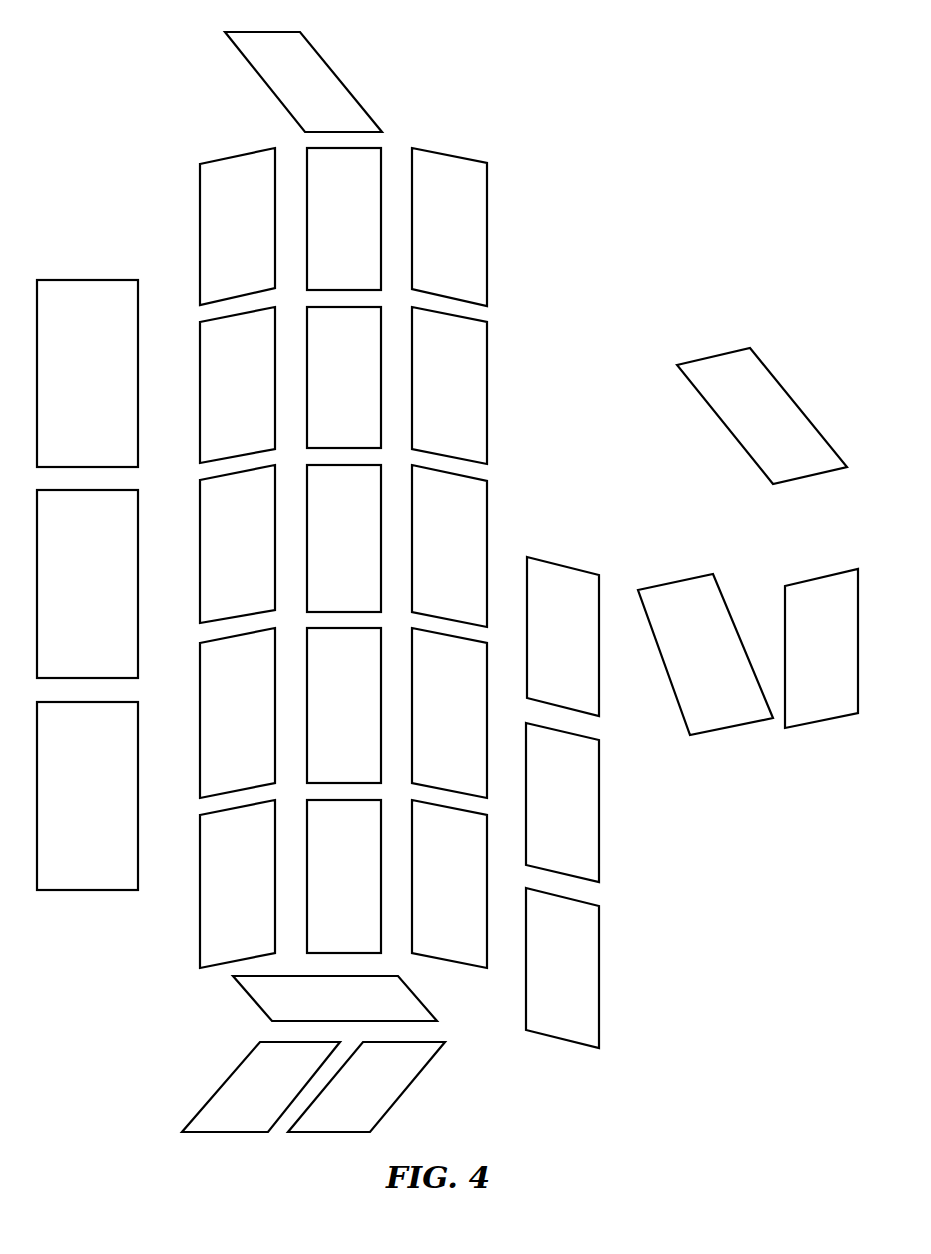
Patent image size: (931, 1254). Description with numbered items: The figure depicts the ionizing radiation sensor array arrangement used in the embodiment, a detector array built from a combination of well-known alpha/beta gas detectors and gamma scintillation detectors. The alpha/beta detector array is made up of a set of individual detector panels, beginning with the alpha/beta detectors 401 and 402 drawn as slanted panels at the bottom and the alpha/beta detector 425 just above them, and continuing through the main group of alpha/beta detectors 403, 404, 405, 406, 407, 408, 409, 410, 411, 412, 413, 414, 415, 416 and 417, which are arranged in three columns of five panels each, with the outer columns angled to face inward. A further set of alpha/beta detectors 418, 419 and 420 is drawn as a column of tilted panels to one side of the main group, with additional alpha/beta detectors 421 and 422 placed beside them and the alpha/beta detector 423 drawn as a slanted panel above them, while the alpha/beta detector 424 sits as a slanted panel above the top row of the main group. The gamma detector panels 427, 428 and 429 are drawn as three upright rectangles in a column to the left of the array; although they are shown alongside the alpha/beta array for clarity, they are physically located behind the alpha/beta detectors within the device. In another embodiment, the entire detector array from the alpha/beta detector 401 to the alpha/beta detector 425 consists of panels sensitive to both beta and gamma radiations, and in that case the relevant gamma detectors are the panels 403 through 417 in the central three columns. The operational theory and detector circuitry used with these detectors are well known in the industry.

The alpha/beta detector 401 is at (336, 1104).
The alpha/beta detector 402 is at (232, 1104).
The alpha/beta detector 403 is at (217, 903).
The alpha/beta detector 404 is at (322, 894).
The alpha/beta detector 405 is at (429, 903).
The alpha/beta detector 406 is at (429, 733).
The alpha/beta detector 407 is at (322, 723).
The alpha/beta detector 408 is at (217, 733).
The alpha/beta detector 409 is at (217, 564).
The alpha/beta detector 410 is at (322, 556).
The alpha/beta detector 411 is at (429, 564).
The alpha/beta detector 412 is at (429, 403).
The alpha/beta detector 413 is at (322, 396).
The alpha/beta detector 414 is at (217, 401).
The alpha/beta detector 415 is at (217, 244).
The alpha/beta detector 416 is at (322, 238).
The alpha/beta detector 417 is at (429, 246).
The alpha/beta detector 418 is at (542, 653).
The alpha/beta detector 419 is at (542, 821).
The alpha/beta detector 420 is at (542, 988).
The alpha/beta detector 421 is at (682, 674).
The alpha/beta detector 422 is at (801, 668).
The alpha/beta detector 423 is at (741, 434).
The alpha/beta detector 424 is at (287, 99).
The alpha/beta detector 425 is at (312, 1013).
The gamma detector panel 427 is at (66, 391).
The gamma detector panel 428 is at (66, 603).
The gamma detector panel 429 is at (66, 816).